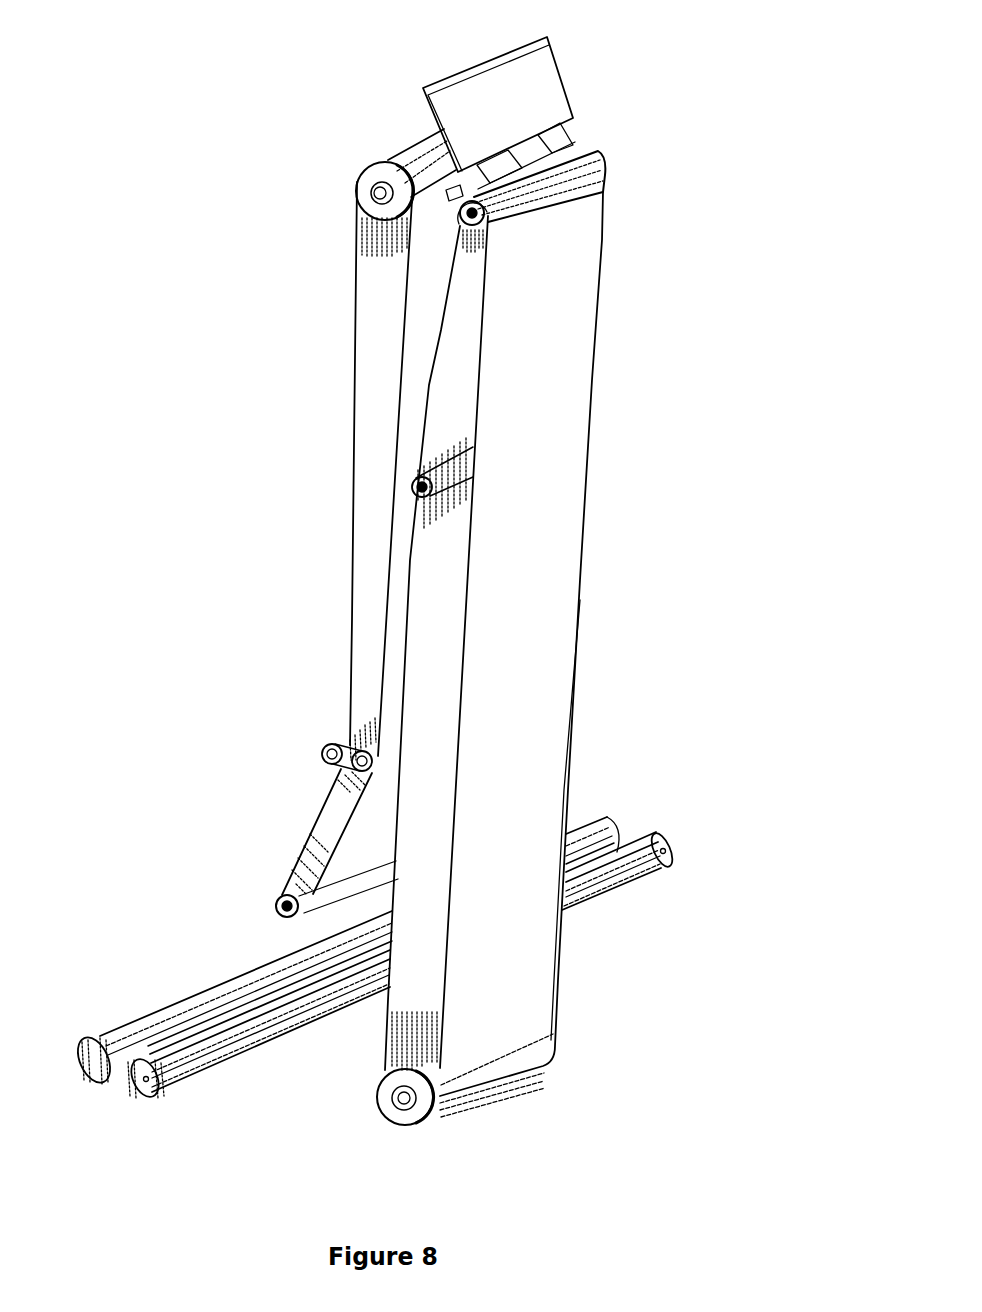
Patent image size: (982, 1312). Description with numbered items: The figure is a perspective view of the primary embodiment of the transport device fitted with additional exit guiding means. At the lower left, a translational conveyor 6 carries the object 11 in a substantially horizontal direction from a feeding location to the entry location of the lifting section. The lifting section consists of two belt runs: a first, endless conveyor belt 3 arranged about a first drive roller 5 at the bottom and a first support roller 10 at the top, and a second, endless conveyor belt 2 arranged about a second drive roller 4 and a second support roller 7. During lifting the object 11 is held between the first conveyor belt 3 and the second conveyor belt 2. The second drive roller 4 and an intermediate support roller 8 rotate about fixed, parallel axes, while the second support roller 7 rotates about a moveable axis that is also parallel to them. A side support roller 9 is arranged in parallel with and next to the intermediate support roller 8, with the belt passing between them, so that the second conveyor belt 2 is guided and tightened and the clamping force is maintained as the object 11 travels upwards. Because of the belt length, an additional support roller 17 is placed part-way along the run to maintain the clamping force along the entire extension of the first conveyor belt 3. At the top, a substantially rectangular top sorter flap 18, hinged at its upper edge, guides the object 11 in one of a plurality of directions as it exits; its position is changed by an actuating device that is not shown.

The second endless conveyor belt 2 is at (356, 352).
The first endless conveyor belt 3 is at (570, 458).
The second drive roller 4 is at (360, 182).
The first drive roller 5 is at (413, 1113).
The translational conveyor 6 is at (100, 1038).
The second support roller 7 is at (278, 905).
The intermediate support roller 8 is at (358, 748).
The side support roller 9 is at (324, 760).
The first support roller 10 is at (486, 217).
The object 11 is at (556, 142).
The additional support roller 17 is at (418, 489).
The top sorter flap 18 is at (563, 85).